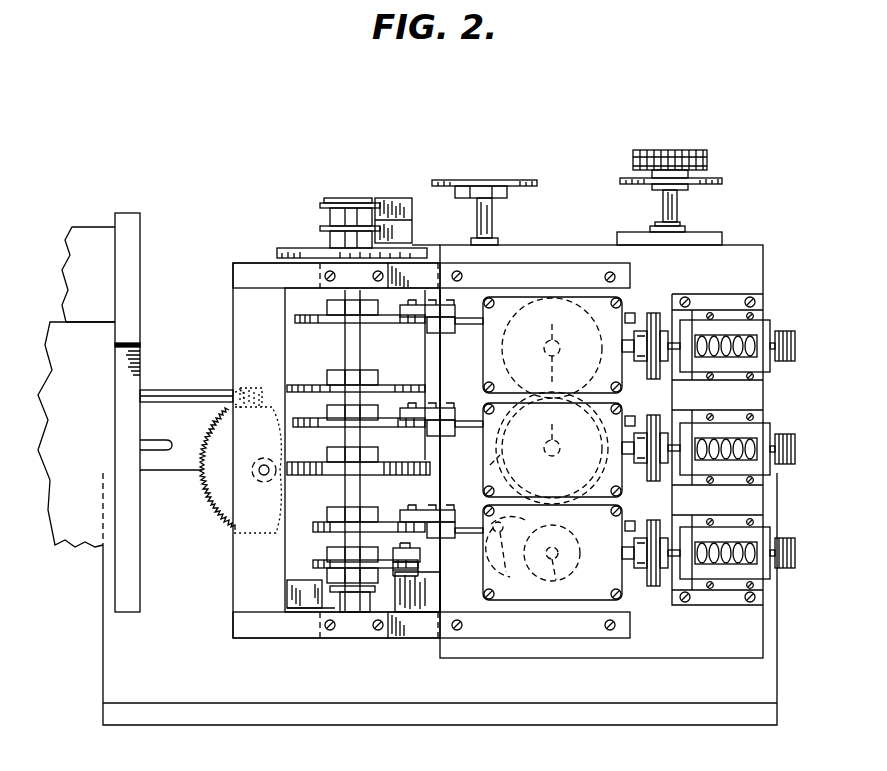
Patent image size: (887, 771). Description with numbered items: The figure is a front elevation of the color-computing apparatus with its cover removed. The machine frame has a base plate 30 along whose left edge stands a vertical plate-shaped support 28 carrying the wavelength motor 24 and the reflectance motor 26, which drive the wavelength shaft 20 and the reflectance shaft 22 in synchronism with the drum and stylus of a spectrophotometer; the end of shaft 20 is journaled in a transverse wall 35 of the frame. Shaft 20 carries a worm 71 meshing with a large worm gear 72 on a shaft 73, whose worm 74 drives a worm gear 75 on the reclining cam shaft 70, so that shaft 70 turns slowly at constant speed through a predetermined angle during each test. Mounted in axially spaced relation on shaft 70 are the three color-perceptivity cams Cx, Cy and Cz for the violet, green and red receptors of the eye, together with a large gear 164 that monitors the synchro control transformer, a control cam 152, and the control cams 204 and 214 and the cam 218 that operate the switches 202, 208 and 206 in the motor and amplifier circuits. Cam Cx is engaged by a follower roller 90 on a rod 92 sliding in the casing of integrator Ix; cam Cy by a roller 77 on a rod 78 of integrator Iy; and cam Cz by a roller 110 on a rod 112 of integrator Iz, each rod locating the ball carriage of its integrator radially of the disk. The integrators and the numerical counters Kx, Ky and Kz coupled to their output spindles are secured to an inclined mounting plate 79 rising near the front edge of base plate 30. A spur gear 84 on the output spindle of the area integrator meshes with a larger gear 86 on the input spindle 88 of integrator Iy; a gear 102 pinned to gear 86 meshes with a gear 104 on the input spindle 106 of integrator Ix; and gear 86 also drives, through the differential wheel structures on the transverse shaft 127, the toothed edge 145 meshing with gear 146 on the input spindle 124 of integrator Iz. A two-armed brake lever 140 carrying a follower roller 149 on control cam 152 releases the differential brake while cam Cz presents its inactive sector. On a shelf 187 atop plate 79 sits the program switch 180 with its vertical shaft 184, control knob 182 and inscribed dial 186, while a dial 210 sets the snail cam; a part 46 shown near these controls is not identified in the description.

The wavelength shaft 20 is at (193, 398).
The reflectance shaft 22 is at (150, 446).
The wavelength motor 24 is at (81, 546).
The reflectance motor 26 is at (90, 236).
The plate-shaped support 28 is at (132, 218).
The base plate 30 is at (366, 705).
The wall or partition 35 is at (428, 365).
The pulley shaft 46 is at (488, 221).
The cam shaft 70 is at (350, 339).
The worm 71 is at (236, 406).
The worm gear 72 is at (214, 506).
The shaft 73 is at (266, 464).
The worm 74 is at (263, 486).
The worm gear 75 is at (313, 470).
The cam follower roller 77 is at (416, 429).
The rod 78 is at (473, 429).
The inclined mounting plate 79 is at (750, 262).
The spur gear 84 is at (520, 364).
The gear 86 is at (546, 366).
The input spindle 88 is at (552, 448).
The cam follower roller 90 is at (415, 322).
The rod 92 is at (473, 326).
The gear 102 is at (502, 461).
The gear 104 is at (431, 275).
The input spindle 106 is at (562, 326).
The cam follower roller 110 is at (404, 527).
The rod 112 is at (466, 514).
The input spindle 124 is at (570, 574).
The transverse shaft 127 is at (509, 558).
The brake lever 140 is at (423, 553).
The toothed circumferential edge 145 is at (420, 568).
The gear 146 is at (572, 553).
The cam follower roller 149 is at (410, 575).
The control cam 152 is at (312, 566).
The large gear 164 is at (316, 385).
The program switch 180 is at (703, 229).
The control knob 182 is at (710, 148).
The vertical shaft 184 is at (670, 208).
The dial 186 is at (723, 176).
The shelf 187 is at (637, 240).
The switch 202 is at (389, 202).
The control cam 204 is at (333, 205).
The switch 206 is at (300, 613).
The switch 208 is at (411, 235).
The dial 210 is at (478, 181).
The control cam 214 is at (323, 229).
The cam 218 is at (357, 597).
The cam Cx is at (300, 318).
The cam Cy is at (309, 418).
The cam Cz is at (313, 528).
The integrator Ix is at (617, 312).
The integrator Iy is at (621, 415).
The integrator Iz is at (615, 523).
The numerical counter Kx is at (771, 319).
The numerical counter Ky is at (771, 422).
The numerical counter Kz is at (772, 526).